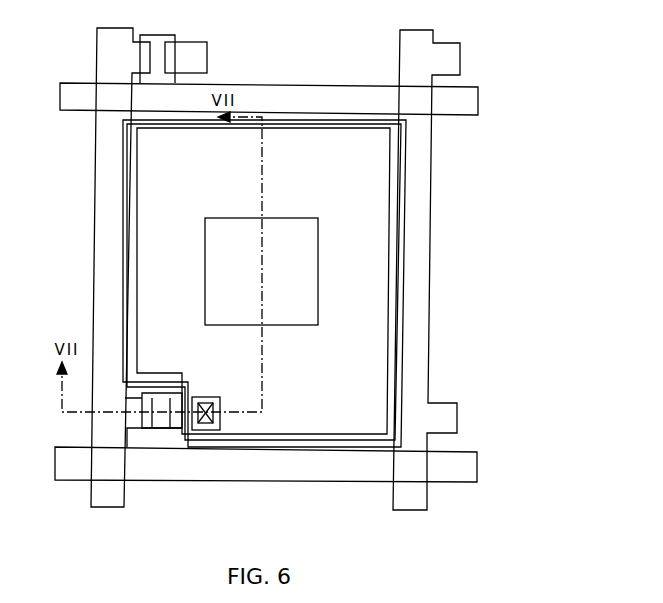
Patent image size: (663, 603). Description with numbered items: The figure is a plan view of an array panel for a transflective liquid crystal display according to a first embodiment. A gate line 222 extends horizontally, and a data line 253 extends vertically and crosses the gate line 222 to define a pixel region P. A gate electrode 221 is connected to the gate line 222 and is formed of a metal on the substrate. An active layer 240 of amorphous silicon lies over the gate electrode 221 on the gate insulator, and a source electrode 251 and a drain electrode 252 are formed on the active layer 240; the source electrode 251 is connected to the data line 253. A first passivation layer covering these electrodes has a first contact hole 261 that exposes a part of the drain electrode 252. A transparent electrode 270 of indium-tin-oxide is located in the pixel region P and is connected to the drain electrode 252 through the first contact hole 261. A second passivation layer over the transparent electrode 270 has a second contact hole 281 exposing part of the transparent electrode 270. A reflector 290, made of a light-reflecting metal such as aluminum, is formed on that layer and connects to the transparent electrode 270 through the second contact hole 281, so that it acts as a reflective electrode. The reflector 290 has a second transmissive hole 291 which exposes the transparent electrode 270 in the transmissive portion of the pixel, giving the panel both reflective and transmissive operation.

The data line 253 is at (95, 268).
The gate line 222 is at (275, 85).
The reflector 290 is at (122, 177).
The transparent electrode 270 is at (137, 227).
The pixel region P is at (372, 206).
The second transmissive hole 291 is at (288, 327).
The gate electrode 221 is at (160, 393).
The active layer 240 is at (157, 428).
The source electrode 251 is at (152, 428).
The drain electrode 252 is at (170, 428).
The second contact hole 281 is at (204, 394).
The first contact hole 261 is at (218, 410).